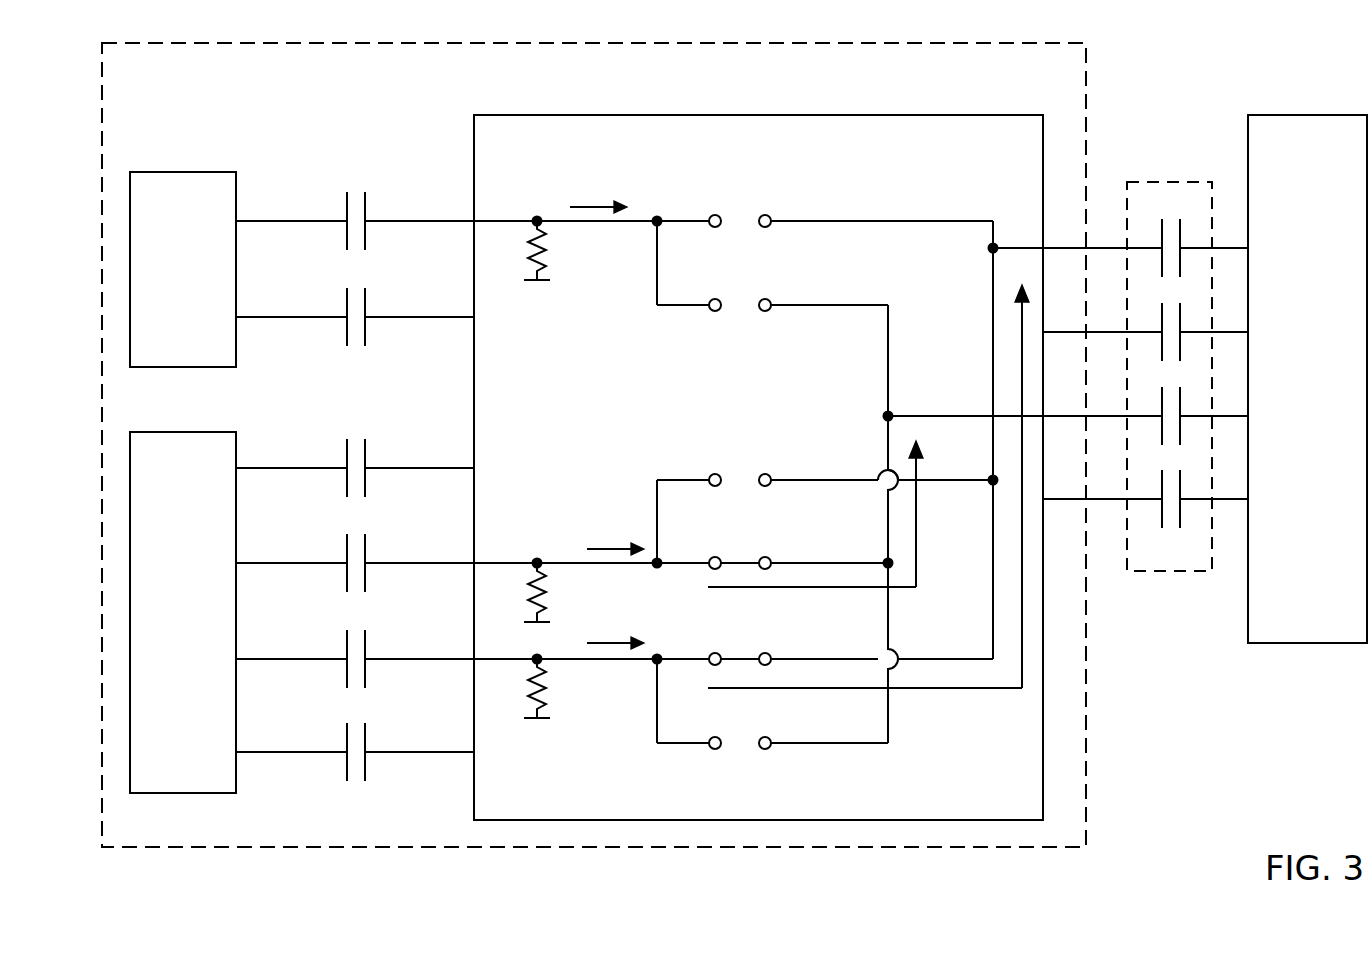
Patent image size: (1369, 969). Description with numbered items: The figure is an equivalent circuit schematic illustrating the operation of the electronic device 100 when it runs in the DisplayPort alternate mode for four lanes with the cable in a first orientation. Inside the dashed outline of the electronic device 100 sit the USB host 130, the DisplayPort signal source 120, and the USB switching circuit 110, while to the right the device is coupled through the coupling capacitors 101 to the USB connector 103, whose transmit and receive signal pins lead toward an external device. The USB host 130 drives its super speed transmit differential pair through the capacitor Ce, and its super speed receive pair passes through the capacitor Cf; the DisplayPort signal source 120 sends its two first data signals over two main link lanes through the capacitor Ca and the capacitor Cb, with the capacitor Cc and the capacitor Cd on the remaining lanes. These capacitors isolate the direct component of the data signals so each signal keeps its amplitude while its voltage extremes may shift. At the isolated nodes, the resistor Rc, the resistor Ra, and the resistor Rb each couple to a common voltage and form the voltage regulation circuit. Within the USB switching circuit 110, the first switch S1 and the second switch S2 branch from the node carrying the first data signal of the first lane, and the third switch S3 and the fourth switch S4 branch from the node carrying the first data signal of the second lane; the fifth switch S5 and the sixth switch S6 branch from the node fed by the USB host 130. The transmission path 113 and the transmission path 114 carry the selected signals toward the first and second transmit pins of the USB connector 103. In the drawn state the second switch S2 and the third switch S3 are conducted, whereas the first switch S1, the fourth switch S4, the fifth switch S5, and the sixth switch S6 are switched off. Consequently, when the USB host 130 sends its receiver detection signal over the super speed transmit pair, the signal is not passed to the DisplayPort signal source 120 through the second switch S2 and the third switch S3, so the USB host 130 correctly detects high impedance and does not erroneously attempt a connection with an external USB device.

The electronic device 100 is at (178, 91).
The USB switching circuit 110 is at (738, 115).
The DisplayPort signal source 120 is at (186, 432).
The USB host 130 is at (178, 172).
The coupling capacitors 101 is at (1163, 182).
The USB connector 103 is at (1306, 115).
The transmission path 113 is at (978, 536).
The transmission path 114 is at (908, 366).
The first switch S1 is at (771, 474).
The second switch S2 is at (771, 557).
The third switch S3 is at (771, 653).
The fourth switch S4 is at (771, 737).
The fifth switch S5 is at (771, 215).
The sixth switch S6 is at (771, 299).
The capacitor Ca is at (377, 569).
The capacitor Cb is at (377, 665).
The capacitor Cc is at (376, 473).
The capacitor Cd is at (377, 762).
The capacitor Ce is at (377, 226).
The capacitor Cf is at (375, 324).
The resistor Ra is at (529, 605).
The resistor Rb is at (529, 701).
The resistor Rc is at (529, 263).